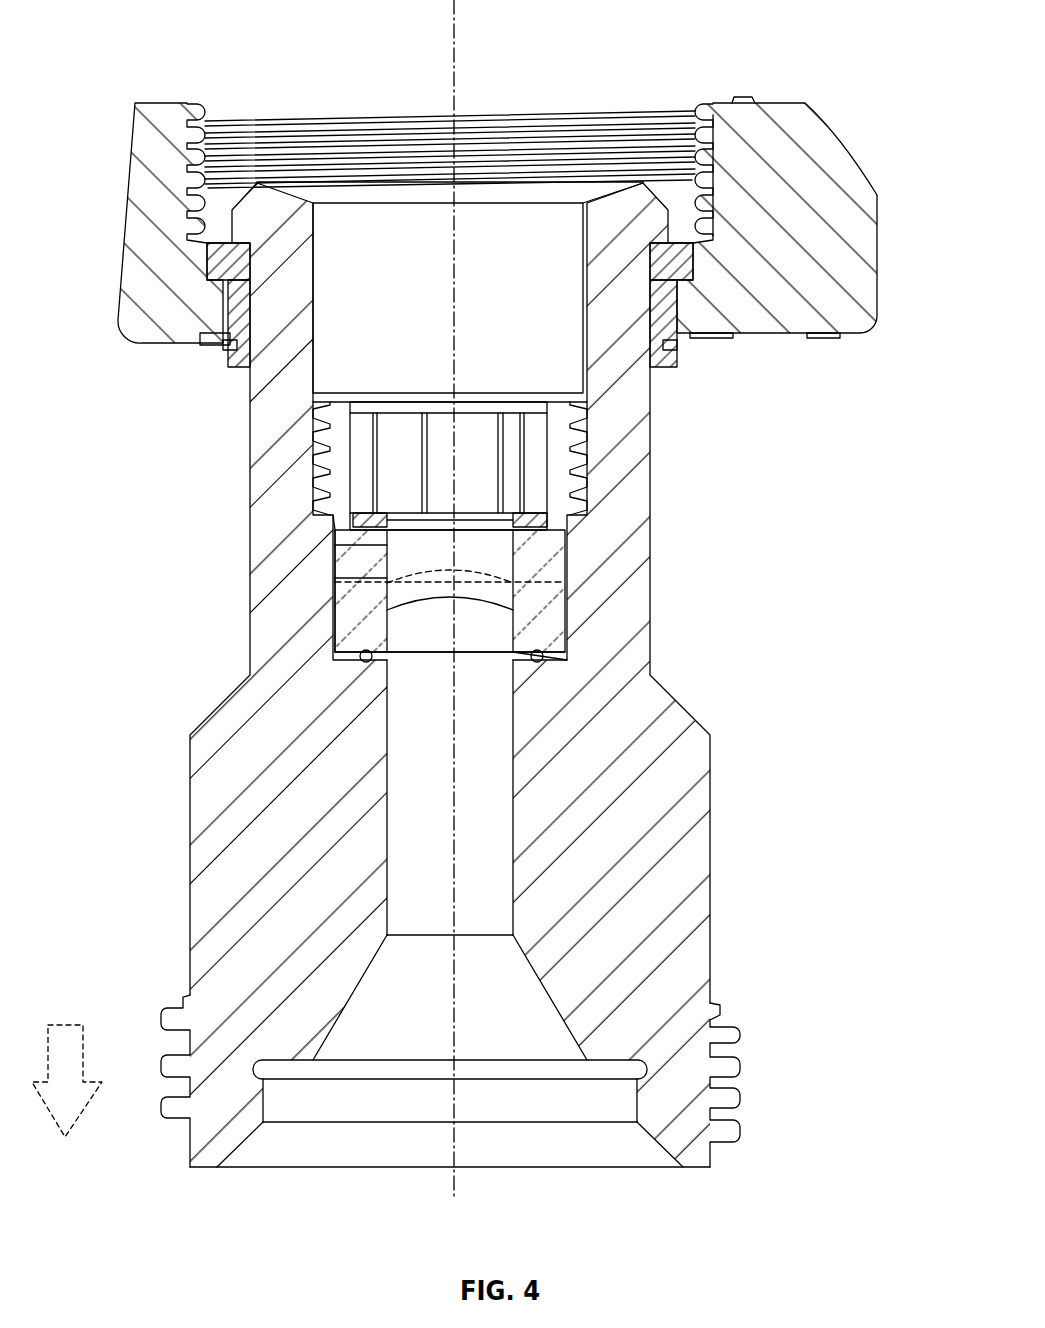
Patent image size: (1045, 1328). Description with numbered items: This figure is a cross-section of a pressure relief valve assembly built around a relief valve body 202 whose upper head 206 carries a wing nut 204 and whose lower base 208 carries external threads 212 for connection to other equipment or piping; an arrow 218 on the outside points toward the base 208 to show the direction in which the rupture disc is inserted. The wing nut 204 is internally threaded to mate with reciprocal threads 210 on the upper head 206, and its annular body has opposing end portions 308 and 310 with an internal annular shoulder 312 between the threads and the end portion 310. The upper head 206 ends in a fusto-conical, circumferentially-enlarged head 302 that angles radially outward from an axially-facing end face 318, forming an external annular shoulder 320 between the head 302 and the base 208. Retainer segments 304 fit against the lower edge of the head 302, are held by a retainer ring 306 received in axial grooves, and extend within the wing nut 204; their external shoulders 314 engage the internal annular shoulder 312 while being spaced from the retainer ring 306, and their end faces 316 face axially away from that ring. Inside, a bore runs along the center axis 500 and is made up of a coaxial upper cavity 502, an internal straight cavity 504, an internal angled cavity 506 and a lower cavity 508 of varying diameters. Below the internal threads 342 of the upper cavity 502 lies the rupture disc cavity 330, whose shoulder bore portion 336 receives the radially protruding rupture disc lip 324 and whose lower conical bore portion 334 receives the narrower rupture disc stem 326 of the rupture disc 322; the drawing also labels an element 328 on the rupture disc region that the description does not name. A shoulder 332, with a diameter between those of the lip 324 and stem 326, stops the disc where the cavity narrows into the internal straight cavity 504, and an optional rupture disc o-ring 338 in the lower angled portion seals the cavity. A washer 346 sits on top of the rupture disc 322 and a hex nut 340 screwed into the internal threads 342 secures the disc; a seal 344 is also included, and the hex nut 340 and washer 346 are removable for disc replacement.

The relief valve body 202 is at (655, 512).
The wing nut 204 is at (838, 213).
The upper head 206 is at (625, 215).
The lower base 208 is at (690, 1160).
The threads 210 is at (665, 125).
The external threads 212 is at (732, 1036).
The arrow 218 is at (70, 1025).
The head 302 is at (697, 182).
The retainer segments 304 is at (668, 372).
The retainer ring 306 is at (680, 345).
The end portion 308 is at (140, 103).
The end portion 310 is at (224, 346).
The internal annular shoulder 312 is at (229, 300).
The external shoulders 314 is at (773, 337).
The end faces 316 is at (205, 245).
The end face 318 is at (219, 240).
The external annular shoulder 320 is at (687, 270).
The rupture disc 322 is at (378, 605).
The rupture disc lip 324 is at (545, 548).
The rupture disc stem 326 is at (541, 661).
The sleeve inner surface 328 is at (527, 625).
The rupture disc cavity 330 is at (345, 527).
The shoulder 332 is at (355, 545).
The lower conical bore portion 334 is at (355, 640).
The shoulder bore portion 336 is at (355, 578).
The rupture disc o-ring 338 is at (541, 668).
The hex nut 340 is at (348, 456).
The internal threads 342 is at (325, 402).
The seal 344 is at (591, 1070).
The washer 346 is at (555, 517).
The center axis 500 is at (460, 32).
The upper cavity 502 is at (550, 282).
The internal straight cavity 504 is at (436, 876).
The internal angled cavity 506 is at (398, 1024).
The lower cavity 508 is at (331, 1157).